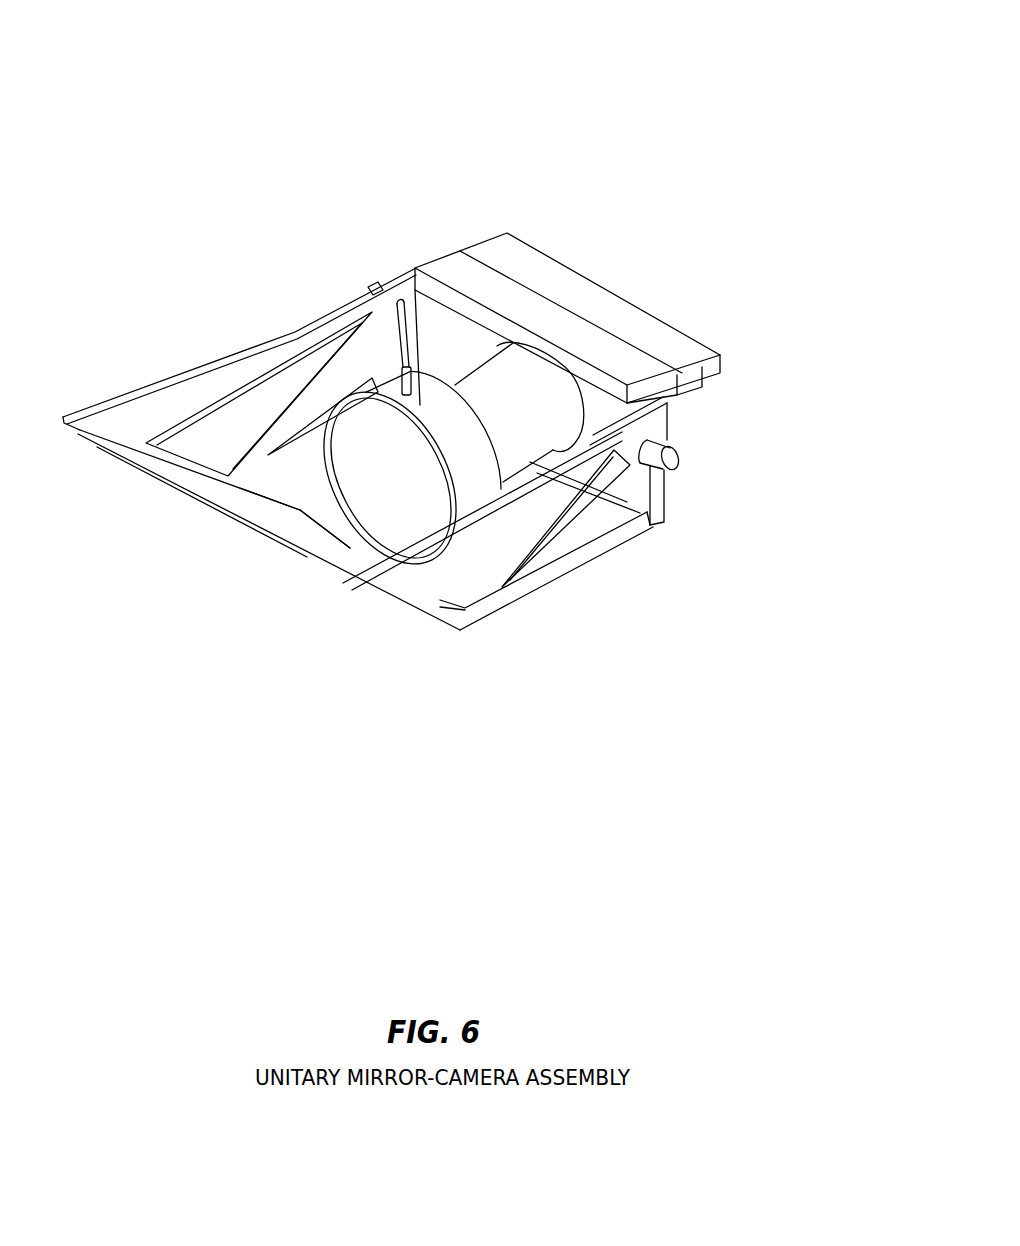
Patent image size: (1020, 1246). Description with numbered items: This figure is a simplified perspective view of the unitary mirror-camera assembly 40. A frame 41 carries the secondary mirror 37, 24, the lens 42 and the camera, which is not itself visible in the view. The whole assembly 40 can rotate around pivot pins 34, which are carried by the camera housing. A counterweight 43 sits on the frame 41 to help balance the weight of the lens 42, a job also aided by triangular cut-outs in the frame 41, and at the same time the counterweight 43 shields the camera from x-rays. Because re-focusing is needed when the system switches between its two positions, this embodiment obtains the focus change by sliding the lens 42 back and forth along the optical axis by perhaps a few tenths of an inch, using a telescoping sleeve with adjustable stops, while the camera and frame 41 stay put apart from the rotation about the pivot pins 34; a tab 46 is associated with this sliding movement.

The unitary mirror-camera assembly 40 is at (97, 667).
The frame 41 is at (490, 603).
The pivot pins 34 is at (373, 289).
The counterweight 43 is at (535, 257).
The lens 42 is at (414, 411).
The tab 46 is at (400, 376).
The mirror 37 is at (290, 527).
The mirror 24 is at (325, 529).